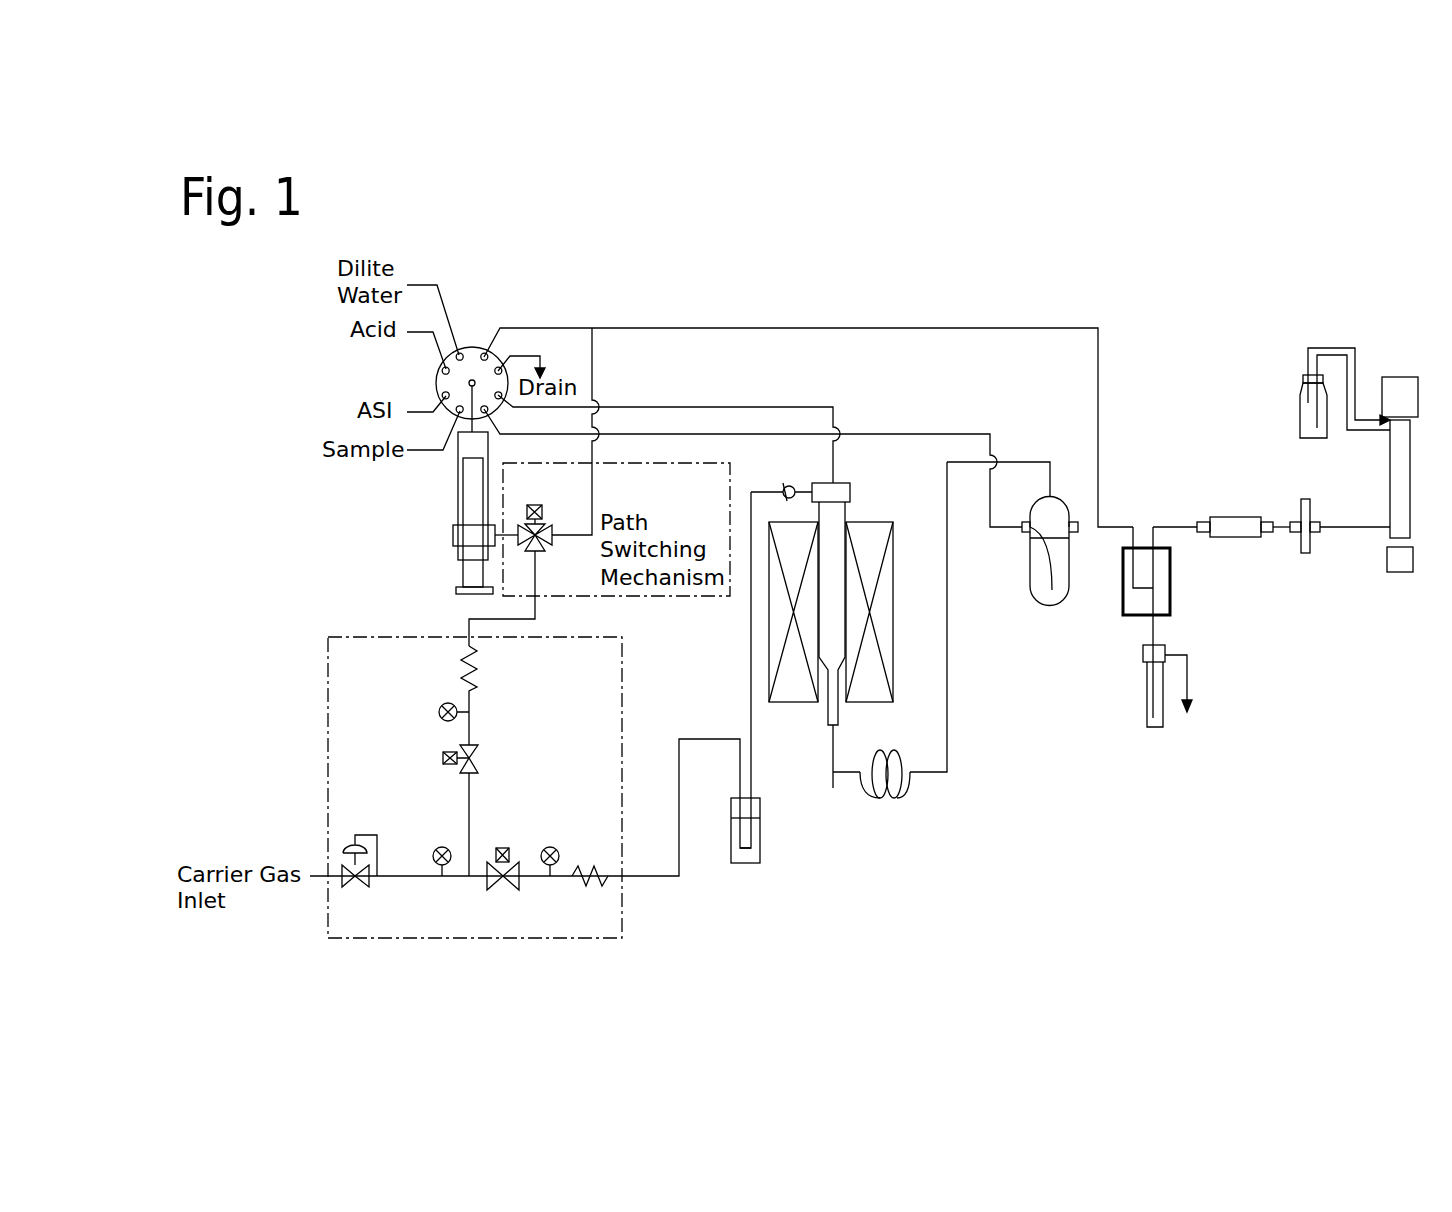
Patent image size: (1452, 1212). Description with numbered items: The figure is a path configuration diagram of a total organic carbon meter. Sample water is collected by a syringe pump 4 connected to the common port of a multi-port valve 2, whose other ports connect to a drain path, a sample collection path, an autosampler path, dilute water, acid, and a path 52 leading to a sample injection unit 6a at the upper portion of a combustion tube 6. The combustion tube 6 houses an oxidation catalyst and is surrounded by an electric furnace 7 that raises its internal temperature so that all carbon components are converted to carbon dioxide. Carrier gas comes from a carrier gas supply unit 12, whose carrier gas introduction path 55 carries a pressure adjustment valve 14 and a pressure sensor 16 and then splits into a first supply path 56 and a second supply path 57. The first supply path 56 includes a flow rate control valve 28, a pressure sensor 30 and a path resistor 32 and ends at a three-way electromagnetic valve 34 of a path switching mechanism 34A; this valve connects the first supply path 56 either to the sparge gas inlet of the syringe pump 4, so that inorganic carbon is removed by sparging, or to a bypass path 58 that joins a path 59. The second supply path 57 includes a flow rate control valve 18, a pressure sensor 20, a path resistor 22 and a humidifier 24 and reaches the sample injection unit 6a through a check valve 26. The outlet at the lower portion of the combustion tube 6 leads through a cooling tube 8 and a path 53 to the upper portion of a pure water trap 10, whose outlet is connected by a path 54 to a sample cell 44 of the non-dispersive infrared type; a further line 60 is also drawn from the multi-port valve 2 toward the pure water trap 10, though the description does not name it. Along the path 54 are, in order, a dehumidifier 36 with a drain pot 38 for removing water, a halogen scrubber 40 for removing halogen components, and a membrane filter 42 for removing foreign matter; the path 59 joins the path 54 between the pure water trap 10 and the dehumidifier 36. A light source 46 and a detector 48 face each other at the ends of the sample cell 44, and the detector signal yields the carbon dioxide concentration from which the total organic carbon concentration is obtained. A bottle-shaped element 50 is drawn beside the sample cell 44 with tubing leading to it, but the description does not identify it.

The multi-port valve 2 is at (474, 345).
The syringe pump 4 is at (458, 498).
The combustion tube 6 is at (832, 627).
The sample injection unit 6a is at (841, 483).
The electric furnace 7 is at (878, 522).
The cooling tube 8 is at (886, 803).
The pure water trap 10 is at (1052, 515).
The carrier gas supply unit 12 is at (373, 637).
The pressure adjustment valve 14 is at (363, 880).
The pressure sensor 16 is at (438, 844).
The flow rate control valve 18 is at (489, 883).
The pressure sensor 20 is at (548, 844).
The path resistor 22 is at (587, 867).
The humidifier 24 is at (741, 856).
The check valve 26 is at (784, 488).
The flow rate control valve 28 is at (477, 766).
The pressure sensor 30 is at (439, 712).
The path resistor 32 is at (463, 670).
The three-way electromagnetic valve 34 is at (534, 505).
The path switching mechanism 34A is at (627, 600).
The dehumidifier 36 is at (1172, 604).
The drain pot 38 is at (1147, 682).
The halogen scrubber 40 is at (1232, 537).
The membrane filter 42 is at (1305, 553).
The sample cell 44 is at (1390, 478).
The light source 46 is at (1400, 377).
The detector 48 is at (1390, 566).
The halogen scrubber 50 is at (1300, 406).
The path 52 is at (730, 405).
The path 53 is at (947, 655).
The path 54 is at (1176, 527).
The carrier gas introduction path 55 is at (411, 880).
The first supply path 56 is at (532, 604).
The second supply path 57 is at (751, 645).
The bypass path 58 is at (595, 376).
The path 59 is at (837, 325).
The flow path 60 is at (898, 434).